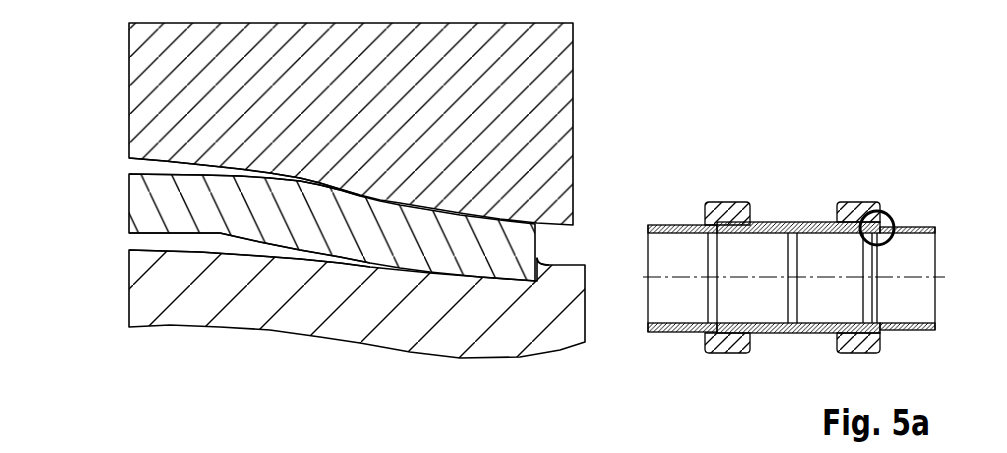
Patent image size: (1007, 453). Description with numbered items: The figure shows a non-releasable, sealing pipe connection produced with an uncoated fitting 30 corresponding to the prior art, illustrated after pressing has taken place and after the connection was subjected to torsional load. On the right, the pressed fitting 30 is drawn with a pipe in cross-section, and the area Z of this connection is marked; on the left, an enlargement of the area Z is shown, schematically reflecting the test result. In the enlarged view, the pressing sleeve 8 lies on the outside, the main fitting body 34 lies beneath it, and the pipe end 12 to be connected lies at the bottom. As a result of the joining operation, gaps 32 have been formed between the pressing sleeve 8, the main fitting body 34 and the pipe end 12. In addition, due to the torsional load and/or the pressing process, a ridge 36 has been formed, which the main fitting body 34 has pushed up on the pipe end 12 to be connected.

The pressing sleeve 8 is at (542, 163).
The pipe end 12 is at (163, 288).
The gaps 32 is at (133, 161).
The main fitting body 34 is at (253, 220).
The ridge 36 is at (541, 259).
The uncoated fitting 30 is at (796, 193).
The area Z is at (883, 219).